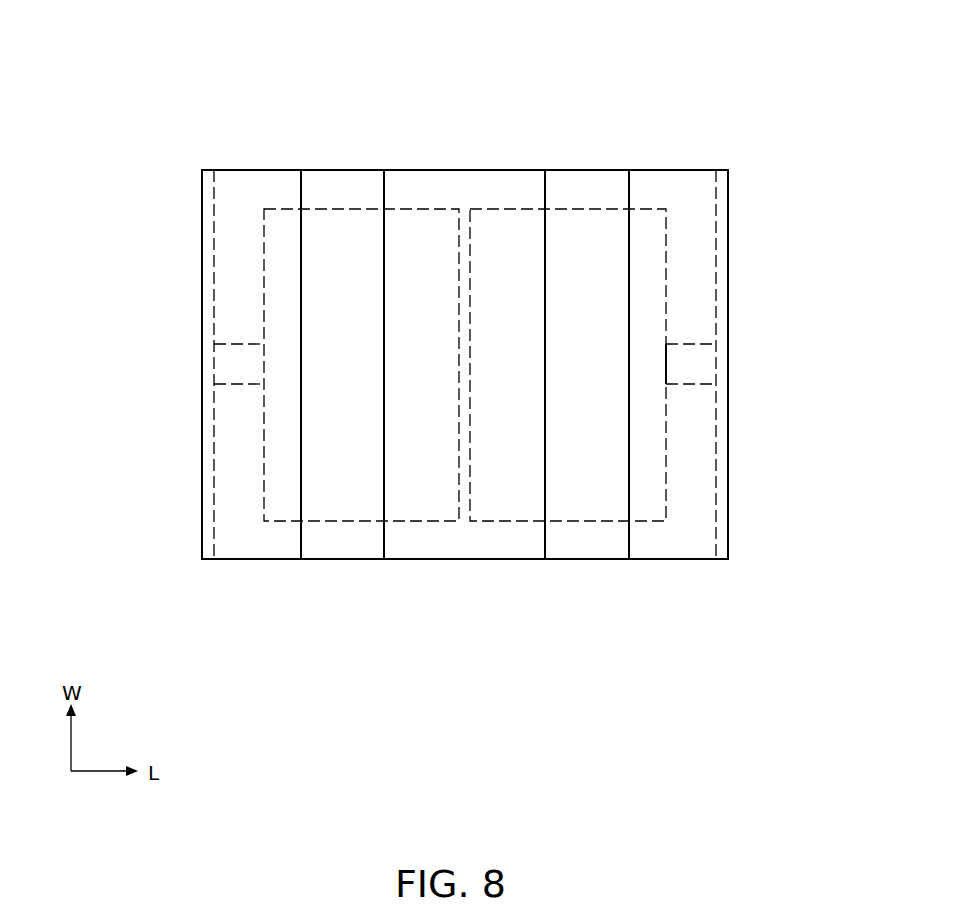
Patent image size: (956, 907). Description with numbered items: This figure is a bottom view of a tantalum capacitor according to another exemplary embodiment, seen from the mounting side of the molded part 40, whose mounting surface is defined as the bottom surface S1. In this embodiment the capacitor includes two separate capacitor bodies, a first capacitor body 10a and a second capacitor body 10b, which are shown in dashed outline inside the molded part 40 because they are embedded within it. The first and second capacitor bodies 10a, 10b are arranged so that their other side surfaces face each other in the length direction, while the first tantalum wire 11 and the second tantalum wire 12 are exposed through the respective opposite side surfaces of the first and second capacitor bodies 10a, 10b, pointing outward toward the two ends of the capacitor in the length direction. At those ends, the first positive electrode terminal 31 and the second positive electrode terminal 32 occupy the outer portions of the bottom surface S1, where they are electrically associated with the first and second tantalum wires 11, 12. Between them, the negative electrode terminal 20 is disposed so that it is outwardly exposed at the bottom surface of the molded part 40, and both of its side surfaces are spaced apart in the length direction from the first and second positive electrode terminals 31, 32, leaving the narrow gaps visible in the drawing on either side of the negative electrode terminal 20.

The molded part 40 is at (588, 178).
The second positive electrode terminal 32 is at (229, 557).
The first positive electrode terminal 31 is at (692, 557).
The negative electrode terminal 20 is at (472, 568).
The second tantalum wire 12 is at (240, 372).
The first tantalum wire 11 is at (690, 372).
The second capacitor body 10b is at (347, 513).
The first capacitor body 10a is at (585, 513).
The bottom surface S1 is at (343, 222).